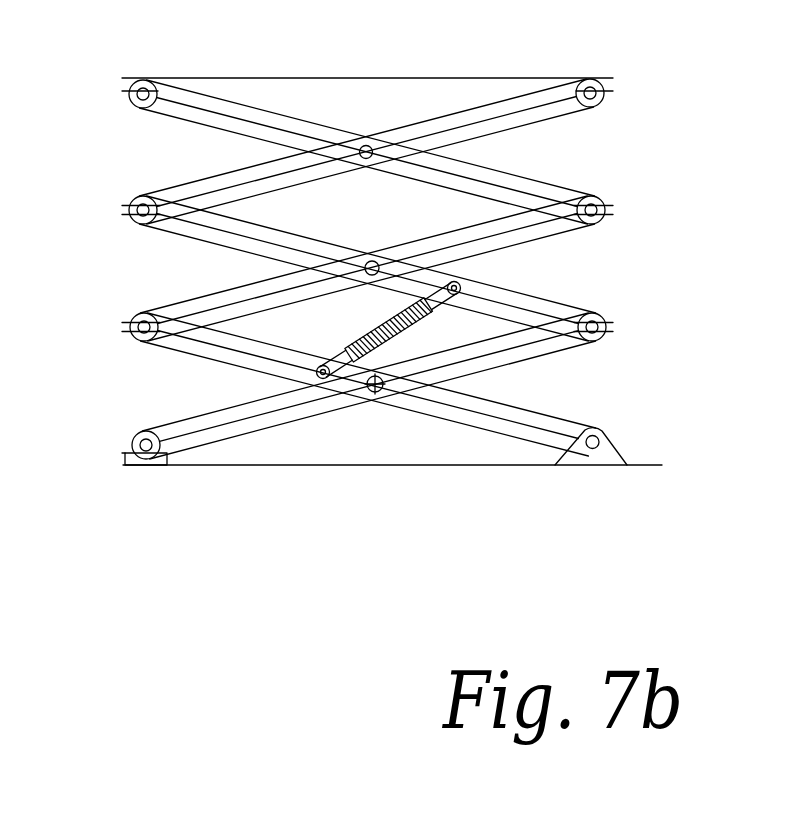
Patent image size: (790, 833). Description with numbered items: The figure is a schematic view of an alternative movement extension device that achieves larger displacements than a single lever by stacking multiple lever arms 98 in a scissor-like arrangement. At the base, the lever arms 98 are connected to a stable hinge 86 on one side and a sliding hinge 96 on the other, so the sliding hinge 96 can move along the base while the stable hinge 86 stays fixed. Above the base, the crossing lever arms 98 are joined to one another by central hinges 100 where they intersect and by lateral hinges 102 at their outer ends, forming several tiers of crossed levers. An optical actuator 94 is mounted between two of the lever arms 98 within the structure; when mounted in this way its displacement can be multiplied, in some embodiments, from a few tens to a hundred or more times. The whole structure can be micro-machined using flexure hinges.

The stable hinge 86 is at (593, 448).
The optical actuator 94 is at (400, 337).
The sliding hinge 96 is at (147, 463).
The lever arms 98 is at (257, 417).
The central hinges 100 is at (374, 392).
The lateral hinges 102 is at (137, 221).